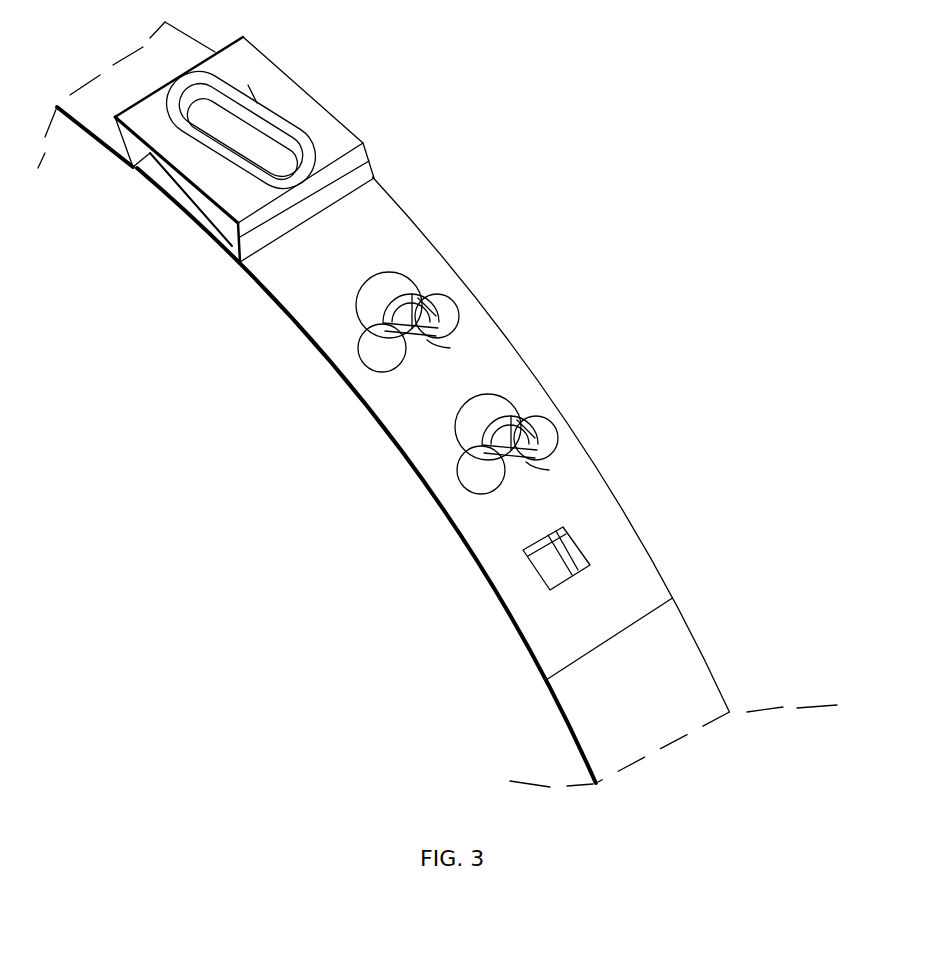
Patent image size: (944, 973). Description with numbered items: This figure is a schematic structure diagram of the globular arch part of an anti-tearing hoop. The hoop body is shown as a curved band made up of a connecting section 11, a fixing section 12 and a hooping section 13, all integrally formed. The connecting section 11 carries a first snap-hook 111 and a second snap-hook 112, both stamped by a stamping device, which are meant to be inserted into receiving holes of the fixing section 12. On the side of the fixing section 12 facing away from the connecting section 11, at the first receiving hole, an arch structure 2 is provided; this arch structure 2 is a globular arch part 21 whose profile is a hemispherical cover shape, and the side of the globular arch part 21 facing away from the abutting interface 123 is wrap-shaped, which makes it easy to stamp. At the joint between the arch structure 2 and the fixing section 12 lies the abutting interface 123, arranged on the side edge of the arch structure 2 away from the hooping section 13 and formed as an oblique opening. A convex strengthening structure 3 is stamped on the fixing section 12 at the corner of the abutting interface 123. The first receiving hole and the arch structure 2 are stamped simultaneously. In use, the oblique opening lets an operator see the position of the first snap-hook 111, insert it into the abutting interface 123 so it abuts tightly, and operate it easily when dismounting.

The arch structure 2 is at (433, 290).
The convex strengthening structure 3 is at (377, 354).
The connecting section 11 is at (593, 728).
The fixing section 12 is at (285, 296).
The hooping section 13 is at (293, 93).
The globular arch part 21 is at (387, 285).
The first snap-hook 111 is at (450, 348).
The second snap-hook 112 is at (546, 471).
The abutting interface 123 is at (458, 323).